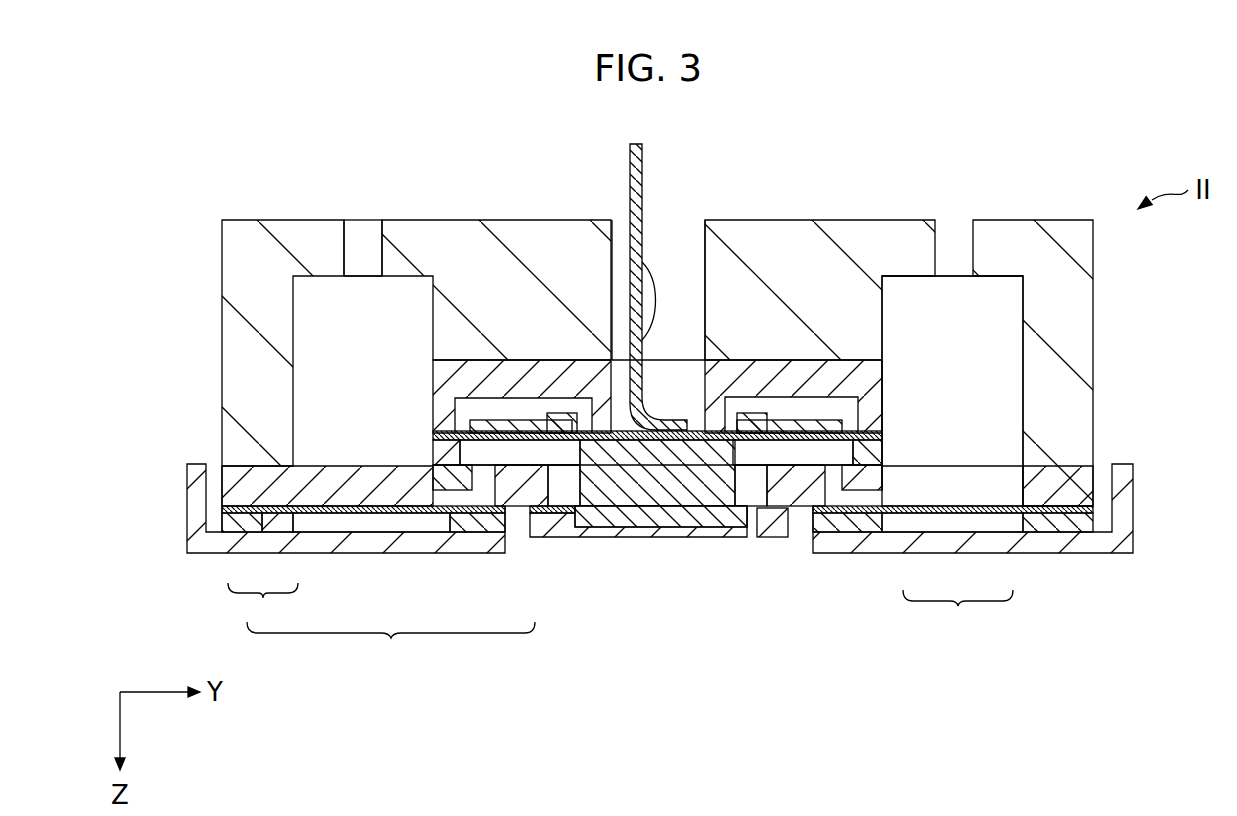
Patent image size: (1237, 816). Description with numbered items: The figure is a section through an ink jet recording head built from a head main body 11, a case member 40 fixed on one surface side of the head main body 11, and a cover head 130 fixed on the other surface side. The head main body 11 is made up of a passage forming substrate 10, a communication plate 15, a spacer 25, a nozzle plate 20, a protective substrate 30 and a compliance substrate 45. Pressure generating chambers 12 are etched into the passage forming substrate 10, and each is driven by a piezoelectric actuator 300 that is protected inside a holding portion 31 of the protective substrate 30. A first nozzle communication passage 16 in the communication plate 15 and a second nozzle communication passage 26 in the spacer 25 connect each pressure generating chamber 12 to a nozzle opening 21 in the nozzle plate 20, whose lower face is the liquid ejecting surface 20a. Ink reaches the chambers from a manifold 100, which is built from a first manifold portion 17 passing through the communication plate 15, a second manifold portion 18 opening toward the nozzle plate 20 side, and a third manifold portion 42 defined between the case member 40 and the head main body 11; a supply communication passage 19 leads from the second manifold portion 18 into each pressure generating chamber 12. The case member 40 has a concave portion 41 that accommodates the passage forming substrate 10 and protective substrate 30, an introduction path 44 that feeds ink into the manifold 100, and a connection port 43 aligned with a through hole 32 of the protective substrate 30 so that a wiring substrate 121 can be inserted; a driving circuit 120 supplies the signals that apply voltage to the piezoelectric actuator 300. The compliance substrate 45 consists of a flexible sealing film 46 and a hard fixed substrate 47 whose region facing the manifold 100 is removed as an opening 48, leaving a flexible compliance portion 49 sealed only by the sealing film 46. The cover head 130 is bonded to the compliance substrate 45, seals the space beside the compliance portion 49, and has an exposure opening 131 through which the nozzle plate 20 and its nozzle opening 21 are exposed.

The passage forming substrate 10 is at (453, 461).
The head main body 11 is at (1165, 430).
The pressure generating chamber 12 is at (610, 513).
The communication plate 15 is at (447, 487).
The first nozzle communication passage 16 is at (560, 497).
The first manifold portion 17 is at (1023, 475).
The second manifold portion 18 is at (884, 516).
The supply communication passage 19 is at (835, 452).
The nozzle plate 20 is at (525, 538).
The liquid ejecting surface 20a is at (695, 557).
The nozzle opening 21 is at (757, 478).
The spacer 25 is at (650, 521).
The second nozzle communication passage 26 is at (570, 490).
The protective substrate 30 is at (440, 410).
The holding portion 31 is at (505, 408).
The through hole 32 is at (700, 395).
The case member 40 is at (1012, 238).
The concave portion 41 is at (873, 380).
The third manifold portion 42 is at (1023, 420).
The connection port 43 is at (611, 243).
The introduction path 44 is at (350, 242).
The compliance substrate 45 is at (263, 604).
The sealing film 46 is at (240, 514).
The fixed substrate 47 is at (288, 514).
The opening 48 is at (1035, 523).
The compliance portion 49 is at (887, 546).
The manifold 100 is at (958, 612).
The driving circuit 120 is at (643, 343).
The wiring substrate 121 is at (643, 165).
The cover head 130 is at (1100, 549).
The exposure opening 131 is at (812, 533).
The piezoelectric actuator 300 is at (827, 398).